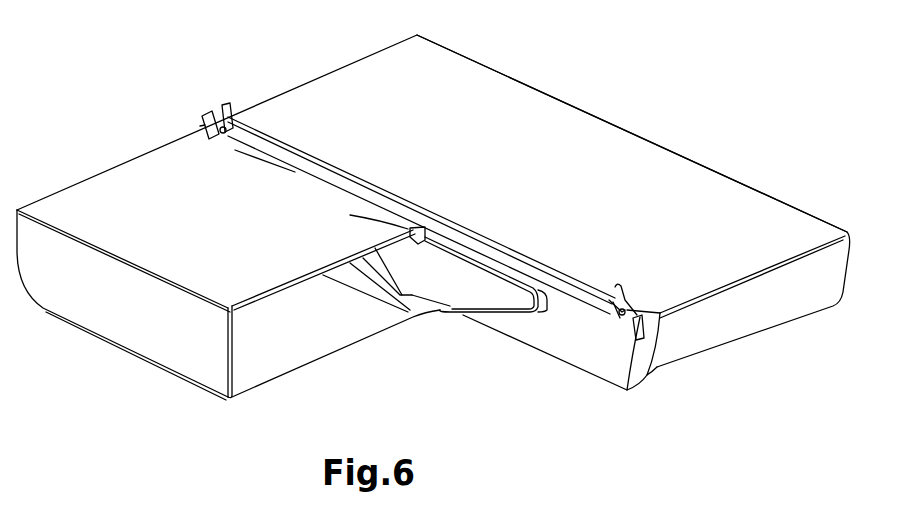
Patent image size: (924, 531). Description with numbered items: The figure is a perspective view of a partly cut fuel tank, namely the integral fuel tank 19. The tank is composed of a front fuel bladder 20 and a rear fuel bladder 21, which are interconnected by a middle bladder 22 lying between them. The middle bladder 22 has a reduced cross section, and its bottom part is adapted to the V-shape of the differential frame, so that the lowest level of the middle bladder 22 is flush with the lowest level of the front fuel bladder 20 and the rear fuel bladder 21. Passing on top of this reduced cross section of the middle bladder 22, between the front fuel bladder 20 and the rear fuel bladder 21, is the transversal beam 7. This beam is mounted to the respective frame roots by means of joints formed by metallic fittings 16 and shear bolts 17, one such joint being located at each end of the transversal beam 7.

The transversal beam 7 is at (319, 146).
The metallic fitting 16 is at (203, 105).
The shear bolt 17 is at (606, 324).
The integral fuel tank 19 is at (130, 150).
The front fuel bladder 20 is at (105, 307).
The rear fuel bladder 21 is at (566, 136).
The middle bladder 22 is at (505, 326).